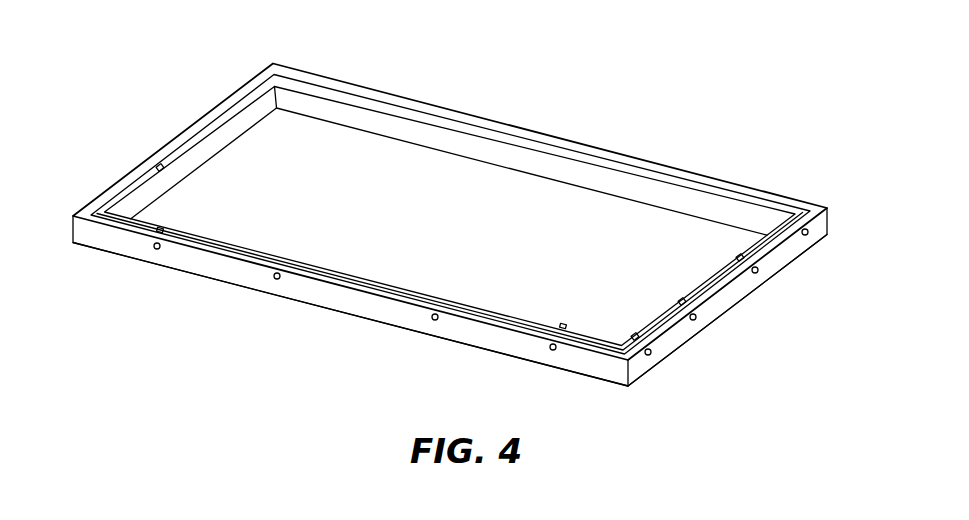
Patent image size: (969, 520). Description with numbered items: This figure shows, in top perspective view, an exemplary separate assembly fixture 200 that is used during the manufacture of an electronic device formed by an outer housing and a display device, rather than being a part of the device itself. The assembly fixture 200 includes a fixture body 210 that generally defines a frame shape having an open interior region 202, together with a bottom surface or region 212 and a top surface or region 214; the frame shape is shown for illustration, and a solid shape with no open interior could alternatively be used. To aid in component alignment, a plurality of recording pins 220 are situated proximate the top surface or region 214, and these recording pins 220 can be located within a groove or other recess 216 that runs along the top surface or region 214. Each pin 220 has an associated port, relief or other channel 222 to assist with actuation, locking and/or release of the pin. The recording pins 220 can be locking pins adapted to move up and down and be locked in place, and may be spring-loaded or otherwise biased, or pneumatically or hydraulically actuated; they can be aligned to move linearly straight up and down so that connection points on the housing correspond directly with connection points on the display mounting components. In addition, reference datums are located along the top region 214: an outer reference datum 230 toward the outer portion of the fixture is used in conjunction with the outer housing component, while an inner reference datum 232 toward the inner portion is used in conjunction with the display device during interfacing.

The assembly fixture 200 is at (716, 90).
The open interior region 202 is at (441, 220).
The fixture body 210 is at (203, 265).
The bottom surface or region 212 is at (473, 346).
The top surface or region 214 is at (337, 280).
The groove or other recess 216 is at (705, 283).
The recording pins 220 is at (637, 337).
The channel 222 is at (651, 355).
The outer reference datum 230 is at (682, 325).
The inner reference datum 232 is at (760, 242).